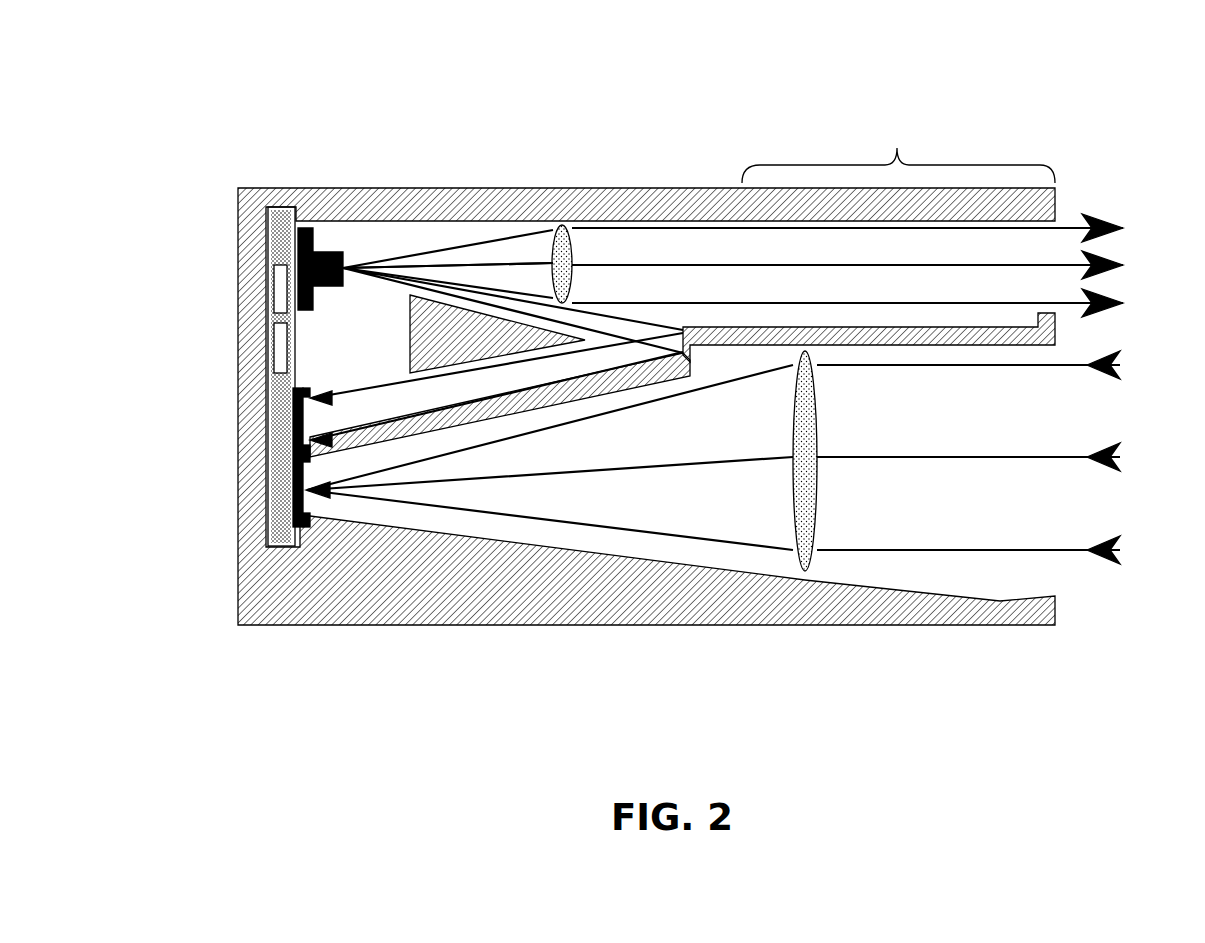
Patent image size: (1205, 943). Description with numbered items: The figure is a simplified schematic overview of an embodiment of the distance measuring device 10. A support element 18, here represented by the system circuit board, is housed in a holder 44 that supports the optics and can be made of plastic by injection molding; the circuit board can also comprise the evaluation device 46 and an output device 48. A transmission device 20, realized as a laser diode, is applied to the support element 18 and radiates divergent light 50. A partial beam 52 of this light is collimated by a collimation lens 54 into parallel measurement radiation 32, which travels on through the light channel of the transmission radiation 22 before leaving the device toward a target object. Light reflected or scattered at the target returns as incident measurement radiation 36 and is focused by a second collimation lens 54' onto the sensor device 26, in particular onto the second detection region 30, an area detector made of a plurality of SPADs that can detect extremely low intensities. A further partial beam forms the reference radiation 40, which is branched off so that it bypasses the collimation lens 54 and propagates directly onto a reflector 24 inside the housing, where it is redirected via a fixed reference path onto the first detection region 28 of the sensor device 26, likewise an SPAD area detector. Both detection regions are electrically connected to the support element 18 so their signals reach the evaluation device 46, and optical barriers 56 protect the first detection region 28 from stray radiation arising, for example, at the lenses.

The distance measuring device 10 is at (688, 327).
The support element 18 is at (288, 396).
The transmission device 20 is at (297, 244).
The light channel of the transmission radiation 22 is at (898, 141).
The reflector 24 is at (686, 325).
The sensor device 26 is at (298, 547).
The first detection region 28 is at (293, 425).
The second detection region 30 is at (293, 498).
The measurement radiation 32 is at (782, 235).
The incident measurement radiation 36 is at (1068, 555).
The reference radiation 40 is at (625, 313).
The holder 44 is at (330, 196).
The evaluation device 46 is at (277, 295).
The output device 48 is at (278, 345).
The divergent light 50 is at (376, 238).
The partial beam 52 is at (500, 260).
The collimation lens 54 is at (551, 176).
The collimation lens 54' is at (833, 549).
The optical barriers 56 is at (470, 350).